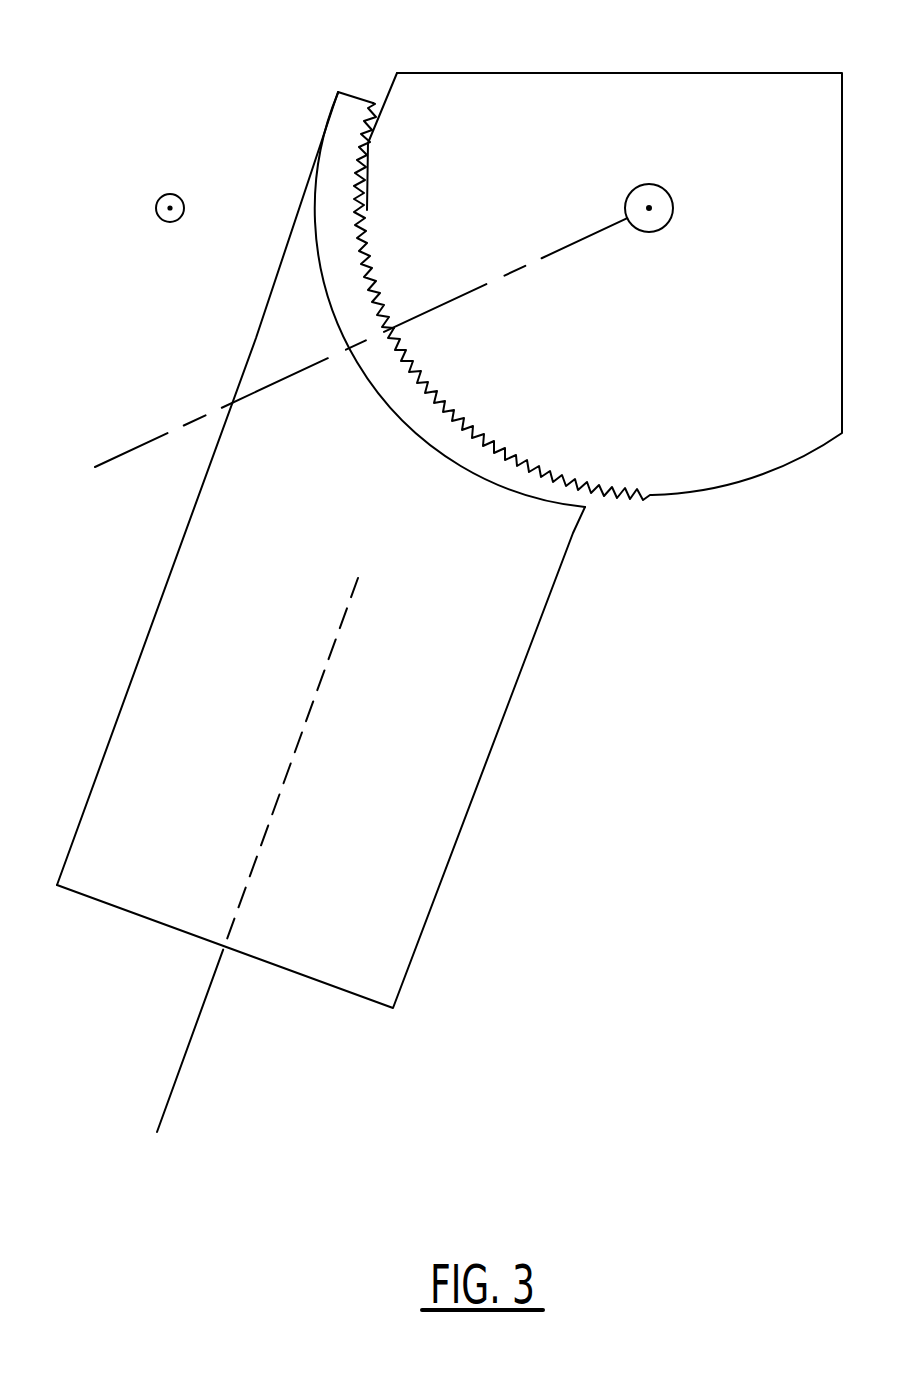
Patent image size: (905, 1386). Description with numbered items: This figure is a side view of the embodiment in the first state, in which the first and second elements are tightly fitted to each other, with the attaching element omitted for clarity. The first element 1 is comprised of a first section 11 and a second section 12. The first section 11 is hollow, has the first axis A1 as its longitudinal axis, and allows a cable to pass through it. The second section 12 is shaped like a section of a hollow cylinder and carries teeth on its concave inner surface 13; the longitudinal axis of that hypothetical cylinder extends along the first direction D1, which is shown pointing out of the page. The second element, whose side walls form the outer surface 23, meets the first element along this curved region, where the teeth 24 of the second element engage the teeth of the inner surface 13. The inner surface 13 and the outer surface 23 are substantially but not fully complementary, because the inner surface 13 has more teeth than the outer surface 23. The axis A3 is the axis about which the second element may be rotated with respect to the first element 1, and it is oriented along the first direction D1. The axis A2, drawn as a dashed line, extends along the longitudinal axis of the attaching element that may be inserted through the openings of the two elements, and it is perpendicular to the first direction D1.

The first element 1 is at (321, 550).
The first section 11 is at (160, 595).
The second section 12 is at (340, 113).
The inner surface 13 is at (370, 143).
The outer surface 23 is at (822, 505).
The teeth 24 is at (654, 560).
The first axis A1 is at (257, 855).
The axis A2 is at (361, 342).
The axis A3 is at (684, 205).
The first direction D1 is at (146, 210).